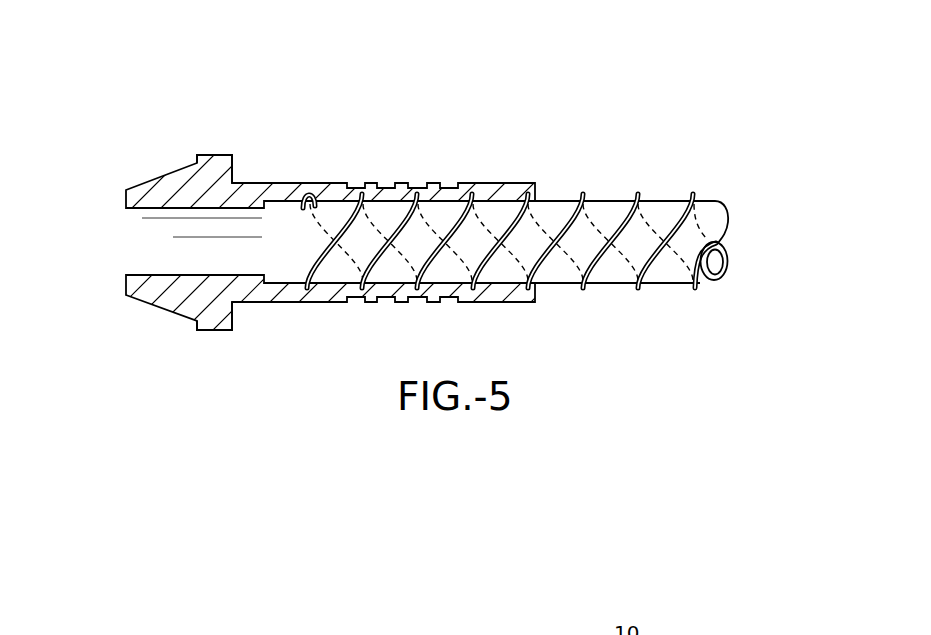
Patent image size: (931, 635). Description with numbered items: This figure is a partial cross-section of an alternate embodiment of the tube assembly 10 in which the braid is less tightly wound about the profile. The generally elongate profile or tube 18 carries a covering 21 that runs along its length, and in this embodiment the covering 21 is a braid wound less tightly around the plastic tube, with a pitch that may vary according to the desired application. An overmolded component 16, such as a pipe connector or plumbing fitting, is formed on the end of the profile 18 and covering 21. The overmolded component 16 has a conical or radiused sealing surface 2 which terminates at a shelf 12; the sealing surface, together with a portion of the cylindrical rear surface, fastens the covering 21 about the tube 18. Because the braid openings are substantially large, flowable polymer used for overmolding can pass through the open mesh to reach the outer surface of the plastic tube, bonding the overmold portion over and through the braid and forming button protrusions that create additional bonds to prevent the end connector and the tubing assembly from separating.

The tube assembly 10 is at (556, 117).
The sealing surface 2 is at (162, 177).
The shelf 12 is at (213, 155).
The overmolded component 16 is at (253, 303).
The profile 18 is at (716, 262).
The covering 21 is at (637, 288).